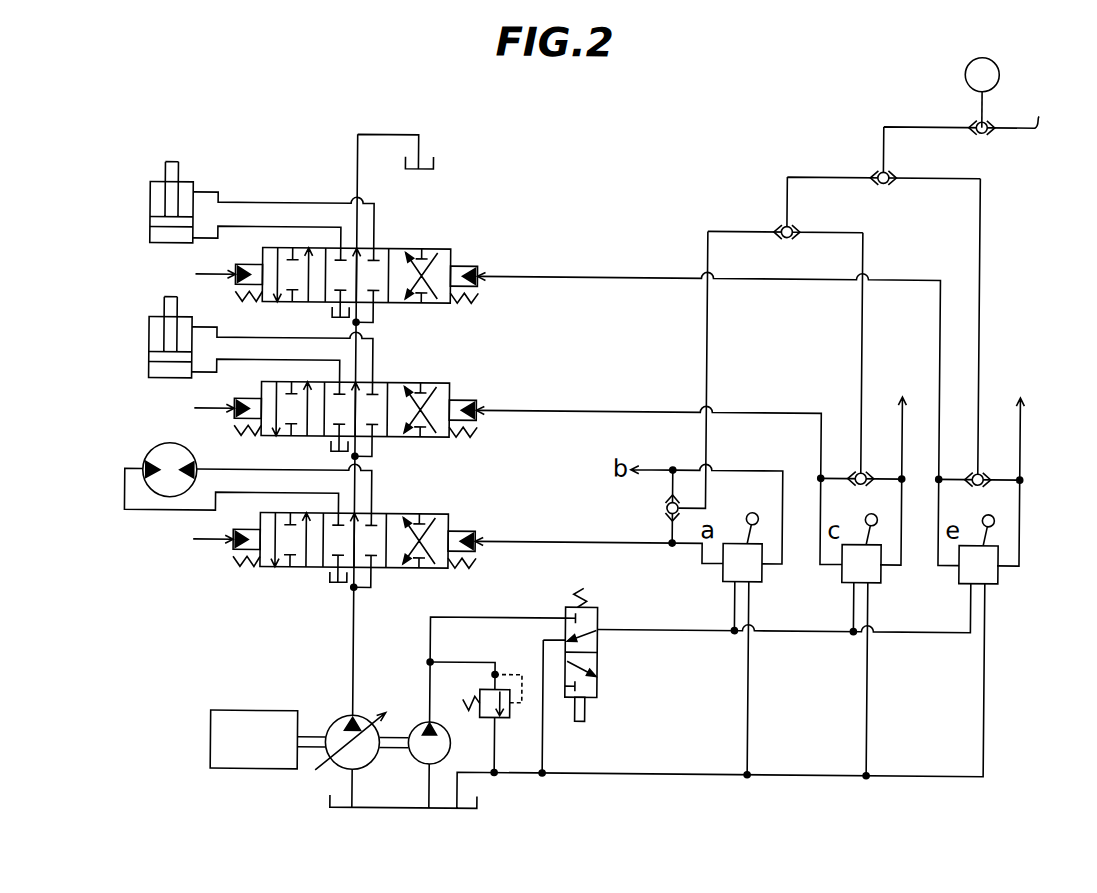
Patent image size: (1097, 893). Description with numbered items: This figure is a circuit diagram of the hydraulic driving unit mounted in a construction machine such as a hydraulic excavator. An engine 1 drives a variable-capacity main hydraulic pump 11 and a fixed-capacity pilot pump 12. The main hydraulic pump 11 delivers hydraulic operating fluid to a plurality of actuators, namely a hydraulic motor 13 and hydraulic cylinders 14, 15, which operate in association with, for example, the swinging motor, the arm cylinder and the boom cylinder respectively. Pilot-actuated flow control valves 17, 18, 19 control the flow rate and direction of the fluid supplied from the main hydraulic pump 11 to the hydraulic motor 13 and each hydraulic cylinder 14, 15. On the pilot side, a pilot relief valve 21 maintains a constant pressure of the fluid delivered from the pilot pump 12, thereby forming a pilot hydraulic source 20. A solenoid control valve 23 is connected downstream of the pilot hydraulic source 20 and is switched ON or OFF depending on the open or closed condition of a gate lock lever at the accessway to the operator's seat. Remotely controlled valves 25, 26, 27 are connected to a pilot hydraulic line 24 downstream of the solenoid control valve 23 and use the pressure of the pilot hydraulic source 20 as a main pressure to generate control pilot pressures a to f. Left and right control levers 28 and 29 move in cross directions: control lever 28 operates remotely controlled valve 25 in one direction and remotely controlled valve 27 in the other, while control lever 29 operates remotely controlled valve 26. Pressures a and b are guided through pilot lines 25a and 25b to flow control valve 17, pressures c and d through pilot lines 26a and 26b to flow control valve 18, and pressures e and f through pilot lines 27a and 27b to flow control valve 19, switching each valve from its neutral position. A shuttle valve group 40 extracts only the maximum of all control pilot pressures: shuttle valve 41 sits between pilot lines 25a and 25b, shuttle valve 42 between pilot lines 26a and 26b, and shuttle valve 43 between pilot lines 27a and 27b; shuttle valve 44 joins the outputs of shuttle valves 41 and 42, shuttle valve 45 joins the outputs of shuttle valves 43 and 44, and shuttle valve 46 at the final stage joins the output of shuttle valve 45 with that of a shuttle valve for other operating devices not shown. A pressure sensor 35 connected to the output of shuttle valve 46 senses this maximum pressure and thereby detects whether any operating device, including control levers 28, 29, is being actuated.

The engine 1 is at (262, 772).
The main hydraulic pump 11 is at (338, 718).
The pilot pump 12 is at (426, 724).
The hydraulic motor 13 is at (150, 460).
The hydraulic cylinder 14 is at (148, 340).
The hydraulic cylinder 15 is at (148, 205).
The flow control valve 17 is at (441, 515).
The flow control valve 18 is at (441, 384).
The flow control valve 19 is at (441, 250).
The pilot hydraulic source 20 is at (513, 618).
The pilot relief valve 21 is at (513, 718).
The solenoid control valve 23 is at (600, 660).
The pilot hydraulic line 24 is at (690, 630).
The remotely controlled valve 25 is at (722, 578).
The pilot line 25a is at (627, 547).
The pilot line 25b is at (770, 470).
The remotely controlled valve 26 is at (842, 578).
The pilot line 26a is at (772, 410).
The pilot line 26b is at (903, 420).
The remotely controlled valve 27 is at (960, 578).
The pilot line 27a is at (787, 279).
The pilot line 27b is at (1022, 445).
The control lever 28 is at (748, 528).
The control lever 29 is at (862, 531).
The pressure sensor 35 is at (997, 70).
The shuttle valve group 40 is at (873, 153).
The shuttle valve 41 is at (663, 520).
The shuttle valve 42 is at (872, 472).
The shuttle valve 43 is at (990, 472).
The shuttle valve 44 is at (773, 222).
The shuttle valve 45 is at (893, 182).
The shuttle valve 46 is at (989, 131).